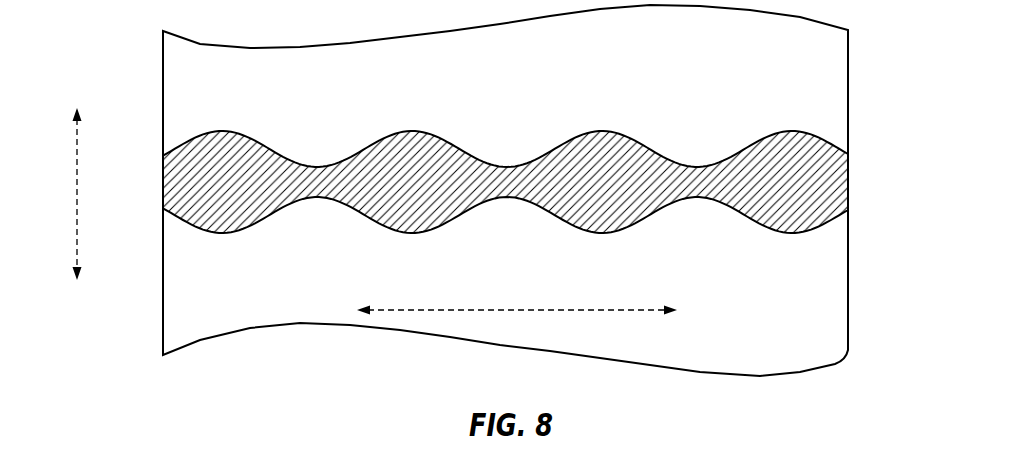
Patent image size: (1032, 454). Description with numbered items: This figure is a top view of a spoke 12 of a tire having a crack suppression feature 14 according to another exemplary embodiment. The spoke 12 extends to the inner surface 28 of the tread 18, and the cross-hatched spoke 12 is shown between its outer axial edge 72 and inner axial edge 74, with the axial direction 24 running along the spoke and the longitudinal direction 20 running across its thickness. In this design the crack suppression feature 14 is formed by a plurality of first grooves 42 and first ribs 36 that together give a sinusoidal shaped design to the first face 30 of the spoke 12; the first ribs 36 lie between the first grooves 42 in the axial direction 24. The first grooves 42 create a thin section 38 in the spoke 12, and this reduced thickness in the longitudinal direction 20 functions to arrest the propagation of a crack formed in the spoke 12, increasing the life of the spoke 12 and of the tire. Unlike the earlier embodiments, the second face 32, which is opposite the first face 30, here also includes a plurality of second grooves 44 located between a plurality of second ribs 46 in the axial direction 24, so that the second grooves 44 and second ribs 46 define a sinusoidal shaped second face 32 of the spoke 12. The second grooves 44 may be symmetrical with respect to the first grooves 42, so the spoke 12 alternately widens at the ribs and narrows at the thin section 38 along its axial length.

The spoke 12 is at (838, 184).
The crack suppression feature 14 is at (174, 132).
The tread 18 is at (770, 358).
The longitudinal direction 20 is at (77, 184).
The axial direction 24 is at (510, 312).
The inner surface 28 is at (822, 52).
The first face 30 is at (594, 240).
The second face 32 is at (594, 128).
The first ribs 36 is at (222, 232).
The thin section 38 is at (321, 166).
The first grooves 42 is at (300, 216).
The second grooves 44 is at (292, 136).
The second ribs 46 is at (222, 136).
The outer axial edge 72 is at (163, 200).
The inner axial edge 74 is at (850, 207).